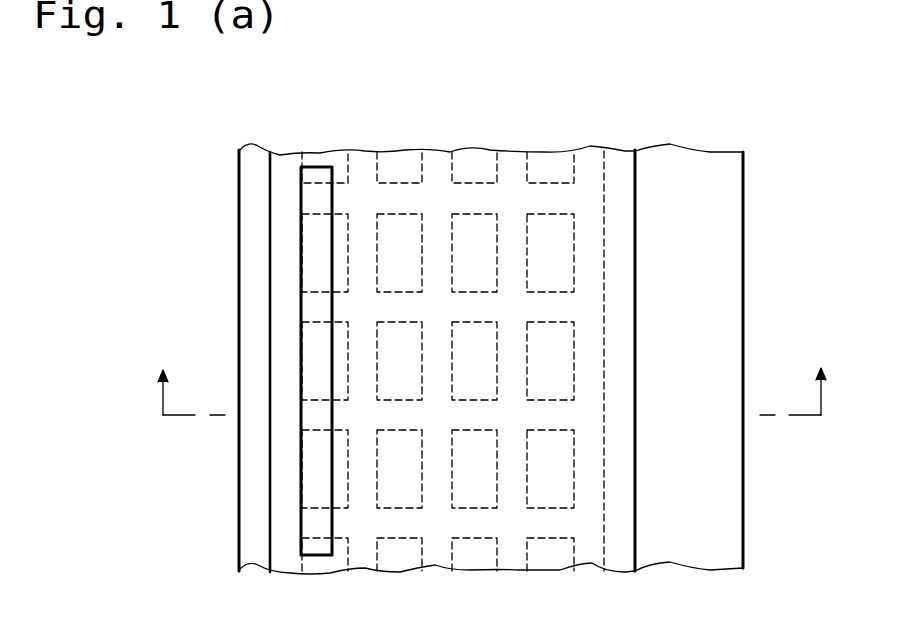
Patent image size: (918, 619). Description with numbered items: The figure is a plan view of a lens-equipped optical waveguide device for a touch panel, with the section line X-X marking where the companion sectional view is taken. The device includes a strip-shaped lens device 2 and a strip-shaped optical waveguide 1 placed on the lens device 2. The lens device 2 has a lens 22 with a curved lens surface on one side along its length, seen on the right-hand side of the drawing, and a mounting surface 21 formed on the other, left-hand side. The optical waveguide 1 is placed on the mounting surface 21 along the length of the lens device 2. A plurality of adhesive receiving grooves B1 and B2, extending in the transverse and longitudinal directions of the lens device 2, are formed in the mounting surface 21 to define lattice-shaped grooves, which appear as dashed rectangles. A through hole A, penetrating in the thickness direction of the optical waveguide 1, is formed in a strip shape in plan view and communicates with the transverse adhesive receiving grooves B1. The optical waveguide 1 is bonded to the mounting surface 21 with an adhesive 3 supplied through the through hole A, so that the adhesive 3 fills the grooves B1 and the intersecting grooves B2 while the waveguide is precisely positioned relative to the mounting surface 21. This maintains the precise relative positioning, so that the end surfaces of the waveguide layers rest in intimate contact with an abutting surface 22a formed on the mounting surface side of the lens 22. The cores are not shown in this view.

The strip-shaped optical waveguide 1 is at (396, 356).
The mounting surface 21 is at (252, 525).
The strip-shaped lens device 2 is at (708, 323).
The lens 22 is at (683, 163).
The abutting surface 22a is at (634, 197).
The adhesive 3 is at (438, 323).
The through hole A is at (302, 252).
The transverse adhesive receiving grooves B1 is at (405, 198).
The longitudinal adhesive receiving grooves B2 is at (505, 166).
The section line X- X is at (491, 368).